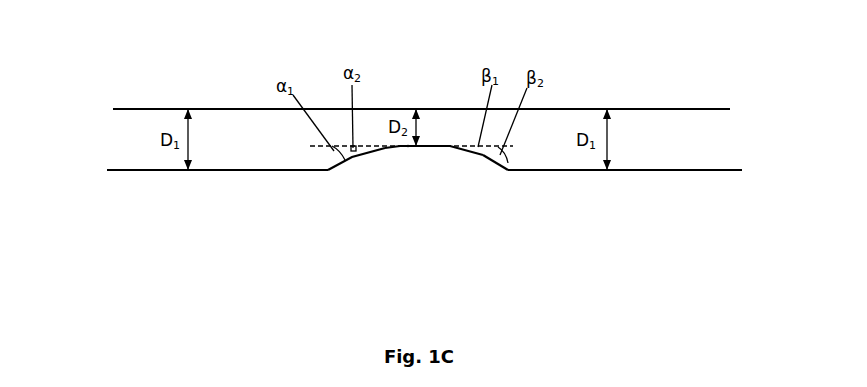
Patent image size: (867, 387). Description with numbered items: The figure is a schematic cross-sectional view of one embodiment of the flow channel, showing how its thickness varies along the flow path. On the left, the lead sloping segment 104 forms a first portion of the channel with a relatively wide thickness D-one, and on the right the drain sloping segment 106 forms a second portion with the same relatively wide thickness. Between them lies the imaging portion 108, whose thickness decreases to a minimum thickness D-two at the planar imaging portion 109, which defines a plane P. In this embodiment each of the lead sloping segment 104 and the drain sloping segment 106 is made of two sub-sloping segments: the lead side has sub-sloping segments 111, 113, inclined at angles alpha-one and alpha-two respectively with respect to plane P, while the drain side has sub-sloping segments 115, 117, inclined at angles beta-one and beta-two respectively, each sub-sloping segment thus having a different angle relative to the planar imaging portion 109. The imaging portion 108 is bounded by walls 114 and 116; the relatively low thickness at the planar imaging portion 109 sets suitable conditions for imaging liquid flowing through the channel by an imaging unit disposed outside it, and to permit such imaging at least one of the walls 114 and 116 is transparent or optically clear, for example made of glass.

The lead sloping segment 104 is at (242, 152).
The drain sloping segment 106 is at (625, 152).
The imaging portion 108 is at (445, 122).
The planar imaging portion 109 is at (422, 148).
The sub-sloping segment 111 is at (345, 160).
The sub-sloping segment 113 is at (373, 149).
The wall 114 is at (398, 108).
The sub-sloping segment 115 is at (459, 147).
The wall 116 is at (410, 148).
The sub-sloping segment 117 is at (495, 153).